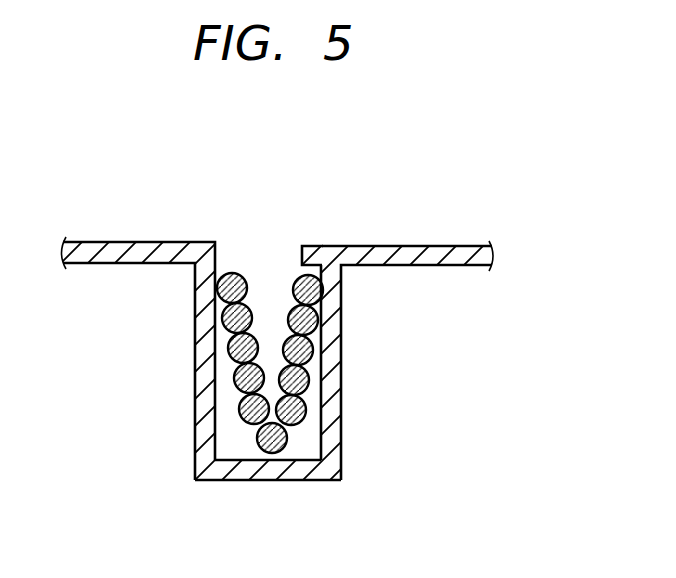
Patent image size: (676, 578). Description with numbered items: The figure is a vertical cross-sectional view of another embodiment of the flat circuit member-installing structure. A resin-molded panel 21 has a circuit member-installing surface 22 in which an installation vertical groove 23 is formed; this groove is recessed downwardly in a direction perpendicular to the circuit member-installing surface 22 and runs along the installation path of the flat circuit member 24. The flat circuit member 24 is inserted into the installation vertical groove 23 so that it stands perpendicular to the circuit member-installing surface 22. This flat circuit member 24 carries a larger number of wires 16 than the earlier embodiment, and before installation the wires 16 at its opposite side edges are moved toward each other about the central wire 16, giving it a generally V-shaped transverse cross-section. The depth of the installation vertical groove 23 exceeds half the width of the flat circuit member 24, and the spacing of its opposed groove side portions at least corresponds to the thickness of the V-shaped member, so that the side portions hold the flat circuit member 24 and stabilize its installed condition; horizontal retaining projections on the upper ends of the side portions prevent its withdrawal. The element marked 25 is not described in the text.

The wires 16 is at (218, 288).
The resin-molded panel 21 is at (175, 235).
The circuit member-installing surface 22 is at (418, 250).
The installation vertical groove 23 is at (246, 458).
The flat circuit member 24 is at (263, 318).
The projecting end of second frame member 25 is at (302, 246).